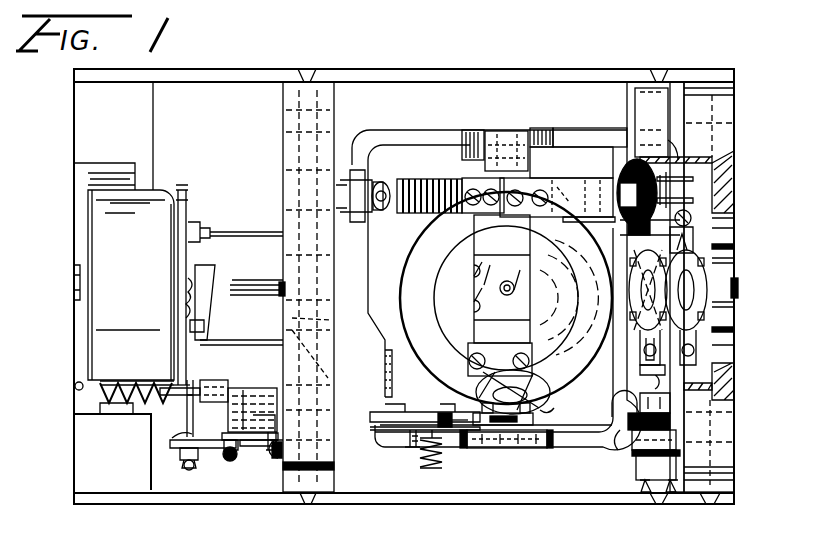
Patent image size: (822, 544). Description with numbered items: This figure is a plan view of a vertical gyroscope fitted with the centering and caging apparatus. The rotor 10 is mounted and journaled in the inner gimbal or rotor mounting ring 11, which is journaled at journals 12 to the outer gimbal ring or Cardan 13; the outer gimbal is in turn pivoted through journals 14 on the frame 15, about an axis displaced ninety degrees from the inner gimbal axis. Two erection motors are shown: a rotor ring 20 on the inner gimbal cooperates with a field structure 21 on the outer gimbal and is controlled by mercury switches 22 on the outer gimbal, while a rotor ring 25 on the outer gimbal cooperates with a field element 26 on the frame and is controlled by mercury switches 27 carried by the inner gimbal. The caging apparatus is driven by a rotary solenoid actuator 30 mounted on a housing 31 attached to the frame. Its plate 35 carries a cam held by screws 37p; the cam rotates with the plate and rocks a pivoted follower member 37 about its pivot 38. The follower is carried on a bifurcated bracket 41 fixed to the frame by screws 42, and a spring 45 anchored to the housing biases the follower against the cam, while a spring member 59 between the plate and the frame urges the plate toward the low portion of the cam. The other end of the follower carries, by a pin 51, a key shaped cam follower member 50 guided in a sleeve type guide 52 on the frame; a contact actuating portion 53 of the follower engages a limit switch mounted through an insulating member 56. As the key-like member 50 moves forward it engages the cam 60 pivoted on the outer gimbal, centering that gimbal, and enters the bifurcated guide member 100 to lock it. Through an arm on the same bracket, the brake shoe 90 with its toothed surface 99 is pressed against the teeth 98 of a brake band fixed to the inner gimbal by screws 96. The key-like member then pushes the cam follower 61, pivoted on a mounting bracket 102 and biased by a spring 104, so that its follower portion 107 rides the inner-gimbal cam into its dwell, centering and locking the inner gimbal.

The rotor 10 is at (570, 354).
The inner gimbal or rotor mounting ring 11 is at (544, 378).
The journals 12 is at (512, 127).
The outer gimbal ring or Cardan 13 is at (574, 436).
The journals 14 is at (278, 284).
The frame 15 is at (412, 69).
The rotor ring 20 is at (570, 180).
The field structure 21 is at (612, 182).
The mercury switches 22 is at (634, 332).
The rotor ring 25 is at (638, 110).
The field element 26 is at (630, 480).
The mercury switches 27 is at (547, 415).
The actuator 30 is at (86, 198).
The housing 31 is at (70, 232).
The plate 35 is at (184, 186).
The follower member 37 is at (176, 448).
The screws 37p is at (204, 226).
The pivot 38 is at (186, 464).
The bifurcated bracket 41 is at (244, 448).
The screws 42 is at (276, 462).
The spring 45 is at (142, 404).
The key shaped cam follower member 50 is at (216, 380).
The pin 51 is at (184, 416).
The sleeve type guide 52 is at (252, 388).
The contact actuating portion 53 is at (226, 460).
The insulating member 56 is at (270, 452).
The spring member 59 is at (215, 338).
The cam 60 is at (663, 302).
The cam follower 61 is at (400, 414).
The brake shoe 90 is at (384, 210).
The screws 96 is at (466, 178).
The teeth 98 is at (414, 179).
The toothed surface 99 is at (384, 182).
The bifurcated guide member 100 is at (393, 392).
The mounting bracket 102 is at (410, 444).
The spring 104 is at (440, 470).
The follower portion or extremity 107 is at (448, 412).